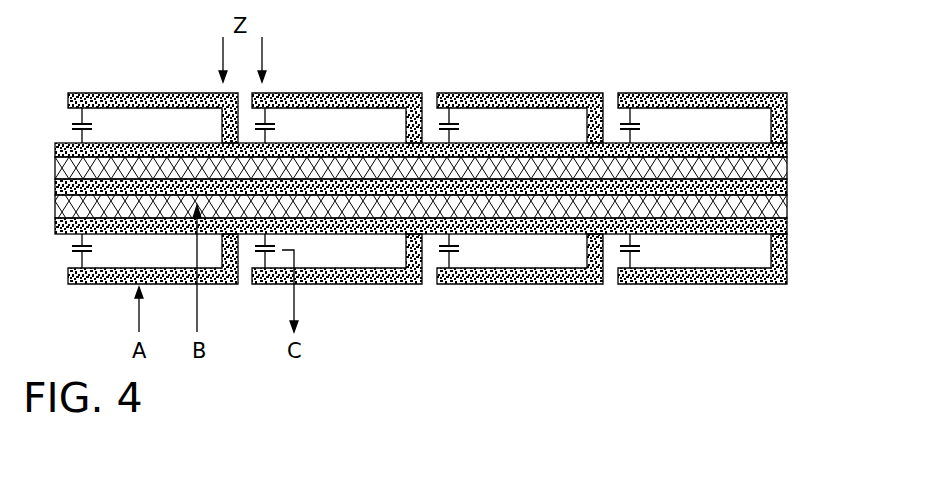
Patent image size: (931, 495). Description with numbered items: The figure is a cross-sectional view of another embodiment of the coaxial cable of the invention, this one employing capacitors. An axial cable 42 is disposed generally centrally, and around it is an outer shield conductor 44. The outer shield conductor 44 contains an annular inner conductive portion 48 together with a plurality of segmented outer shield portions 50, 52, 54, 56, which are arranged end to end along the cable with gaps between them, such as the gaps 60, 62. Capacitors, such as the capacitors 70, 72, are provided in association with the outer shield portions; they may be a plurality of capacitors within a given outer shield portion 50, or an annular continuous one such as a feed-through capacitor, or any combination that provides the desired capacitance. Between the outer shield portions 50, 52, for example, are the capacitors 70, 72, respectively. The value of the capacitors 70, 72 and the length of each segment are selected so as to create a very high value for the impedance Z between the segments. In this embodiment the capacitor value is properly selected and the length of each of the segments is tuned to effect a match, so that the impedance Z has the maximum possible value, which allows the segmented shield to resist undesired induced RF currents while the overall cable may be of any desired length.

The axial cable 42 is at (800, 168).
The outer shield conductor 44 is at (800, 108).
The annular inner conductive portion 48 is at (717, 168).
The segmented outer shield portion 50 is at (145, 93).
The segmented outer shield portion 52 is at (368, 92).
The segmented outer shield portion 54 is at (523, 98).
The segmented outer shield portion 56 is at (747, 97).
The gap 60 is at (610, 98).
The gap 62 is at (427, 100).
The capacitor 70 is at (85, 117).
The capacitor 72 is at (267, 117).